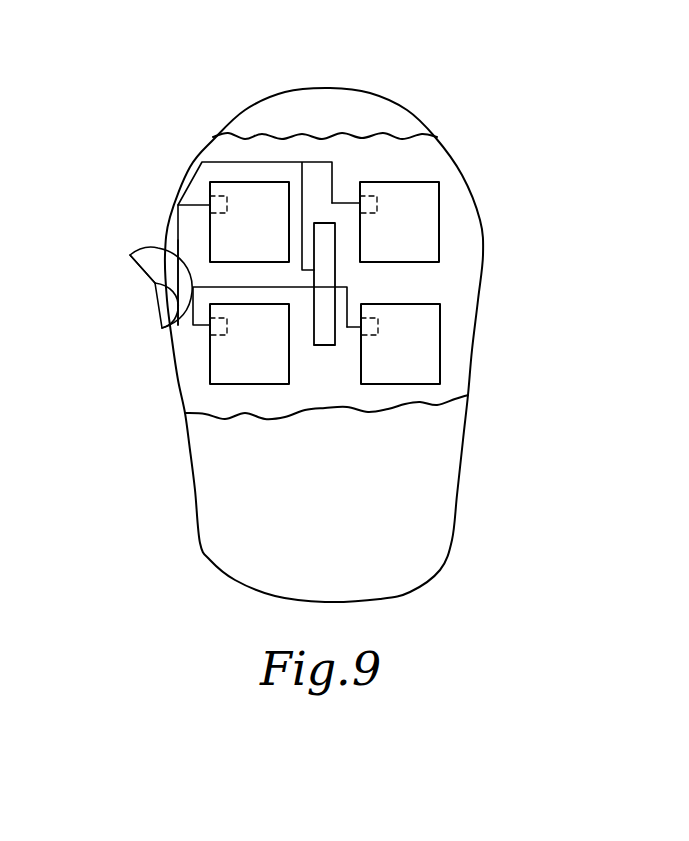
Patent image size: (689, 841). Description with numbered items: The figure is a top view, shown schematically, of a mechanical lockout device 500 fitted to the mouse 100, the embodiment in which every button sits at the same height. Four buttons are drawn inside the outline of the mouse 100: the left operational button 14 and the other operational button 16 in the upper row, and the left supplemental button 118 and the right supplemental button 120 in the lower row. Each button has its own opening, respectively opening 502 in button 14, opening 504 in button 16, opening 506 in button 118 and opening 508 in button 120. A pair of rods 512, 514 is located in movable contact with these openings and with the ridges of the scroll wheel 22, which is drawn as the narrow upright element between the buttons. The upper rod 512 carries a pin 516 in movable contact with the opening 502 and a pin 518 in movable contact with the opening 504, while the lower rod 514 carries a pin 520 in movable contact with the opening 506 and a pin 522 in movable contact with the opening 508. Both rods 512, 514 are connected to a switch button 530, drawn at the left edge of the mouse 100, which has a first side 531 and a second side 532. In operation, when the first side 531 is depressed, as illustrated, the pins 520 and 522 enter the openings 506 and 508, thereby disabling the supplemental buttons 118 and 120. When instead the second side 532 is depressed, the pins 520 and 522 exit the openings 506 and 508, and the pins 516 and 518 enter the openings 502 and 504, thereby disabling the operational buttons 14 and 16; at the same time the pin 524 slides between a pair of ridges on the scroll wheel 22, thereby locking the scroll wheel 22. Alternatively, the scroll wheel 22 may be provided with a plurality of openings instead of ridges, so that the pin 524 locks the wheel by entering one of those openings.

The mouse 100 is at (438, 507).
The mechanical lockout device 500 is at (518, 155).
The left operational button 14 is at (262, 238).
The operational button 16 is at (412, 238).
The left supplemental button 118 is at (270, 361).
The right supplemental button 120 is at (420, 361).
The opening 502 is at (228, 197).
The opening 504 is at (376, 197).
The opening 506 is at (223, 332).
The opening 508 is at (378, 325).
The rod 512 is at (203, 163).
The rod 514 is at (180, 320).
The pin 516 is at (193, 203).
The pin 518 is at (348, 203).
The pin 520 is at (202, 332).
The pin 522 is at (347, 330).
The pin 524 is at (302, 271).
The scroll wheel 22 is at (327, 346).
The switch button 530 is at (153, 288).
The first side 531 is at (156, 311).
The second side 532 is at (141, 269).